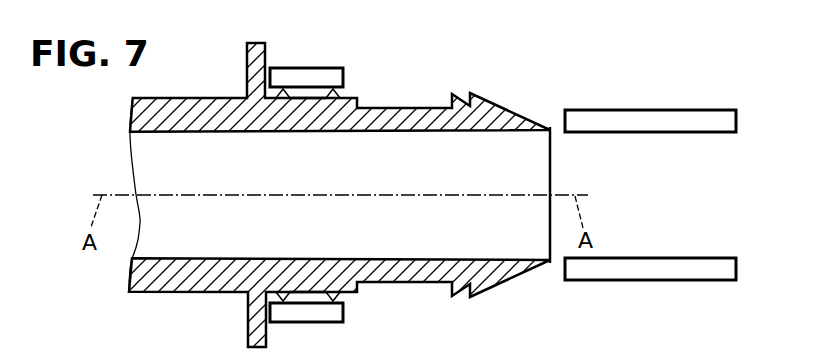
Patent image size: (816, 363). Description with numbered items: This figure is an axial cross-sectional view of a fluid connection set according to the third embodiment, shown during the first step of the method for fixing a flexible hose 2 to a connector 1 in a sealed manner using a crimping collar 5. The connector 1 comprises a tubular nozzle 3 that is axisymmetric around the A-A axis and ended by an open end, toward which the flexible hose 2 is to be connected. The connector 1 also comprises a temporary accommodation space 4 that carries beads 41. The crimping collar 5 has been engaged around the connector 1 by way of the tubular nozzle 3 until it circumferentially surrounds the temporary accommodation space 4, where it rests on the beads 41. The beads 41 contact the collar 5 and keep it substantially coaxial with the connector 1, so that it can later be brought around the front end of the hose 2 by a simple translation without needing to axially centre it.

The connector 1 is at (232, 64).
The flexible hose 2 is at (685, 106).
The tubular nozzle 3 is at (358, 134).
The temporary accommodation space 4 is at (304, 95).
The beads 41 is at (343, 88).
The crimping collar 5 is at (298, 67).